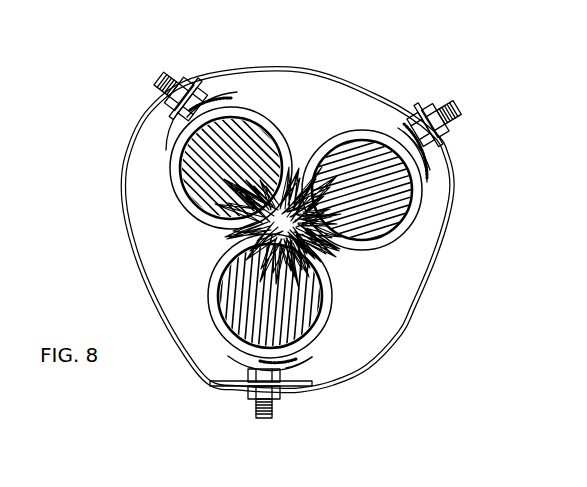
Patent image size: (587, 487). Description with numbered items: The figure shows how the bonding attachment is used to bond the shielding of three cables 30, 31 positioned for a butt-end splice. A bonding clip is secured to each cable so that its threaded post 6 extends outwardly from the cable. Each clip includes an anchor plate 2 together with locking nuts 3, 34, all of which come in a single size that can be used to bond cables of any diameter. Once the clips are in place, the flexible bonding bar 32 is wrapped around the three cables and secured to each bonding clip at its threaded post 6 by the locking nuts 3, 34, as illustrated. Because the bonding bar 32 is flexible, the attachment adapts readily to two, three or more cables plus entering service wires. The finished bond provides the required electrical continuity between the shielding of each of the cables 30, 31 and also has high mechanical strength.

The anchor plate 2 is at (166, 151).
The locking nut 3 is at (178, 112).
The threaded post 6 is at (159, 68).
The cable 30 is at (346, 134).
The cable 31 is at (190, 200).
The bonding bar 32 is at (322, 71).
The locking nut 34 is at (161, 96).